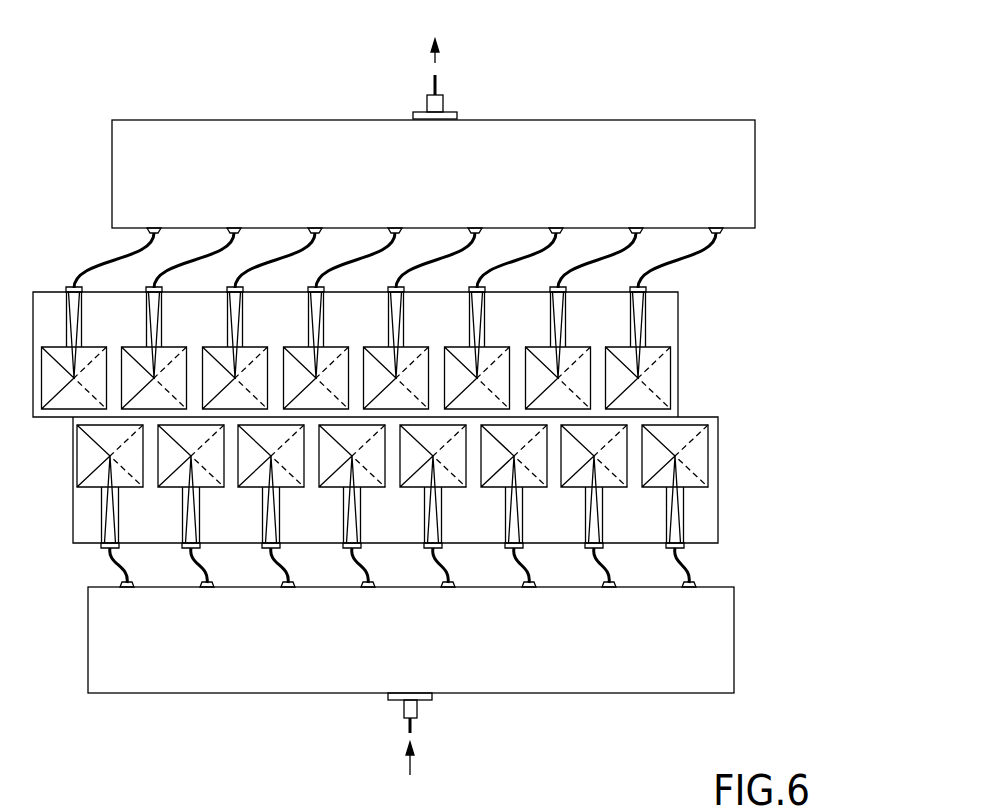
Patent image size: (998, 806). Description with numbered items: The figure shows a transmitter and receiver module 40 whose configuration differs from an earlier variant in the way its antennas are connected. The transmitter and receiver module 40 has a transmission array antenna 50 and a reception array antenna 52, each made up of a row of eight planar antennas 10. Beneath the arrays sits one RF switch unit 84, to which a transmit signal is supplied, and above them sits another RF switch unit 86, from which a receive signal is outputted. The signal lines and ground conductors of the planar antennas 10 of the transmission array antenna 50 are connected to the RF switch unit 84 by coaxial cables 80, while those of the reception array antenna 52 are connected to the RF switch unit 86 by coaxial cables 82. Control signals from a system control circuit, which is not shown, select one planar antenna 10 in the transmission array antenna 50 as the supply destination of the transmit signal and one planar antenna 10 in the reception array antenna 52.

The transmitter and receiver module 40 is at (661, 86).
The RF switch unit 86 is at (245, 130).
The coaxial cable 82 is at (683, 262).
The reception array antenna 52 is at (685, 362).
The planar antenna 10 is at (662, 378).
The transmission array antenna 50 is at (718, 448).
The coaxial cable 80 is at (681, 566).
The RF switch unit 84 is at (703, 635).